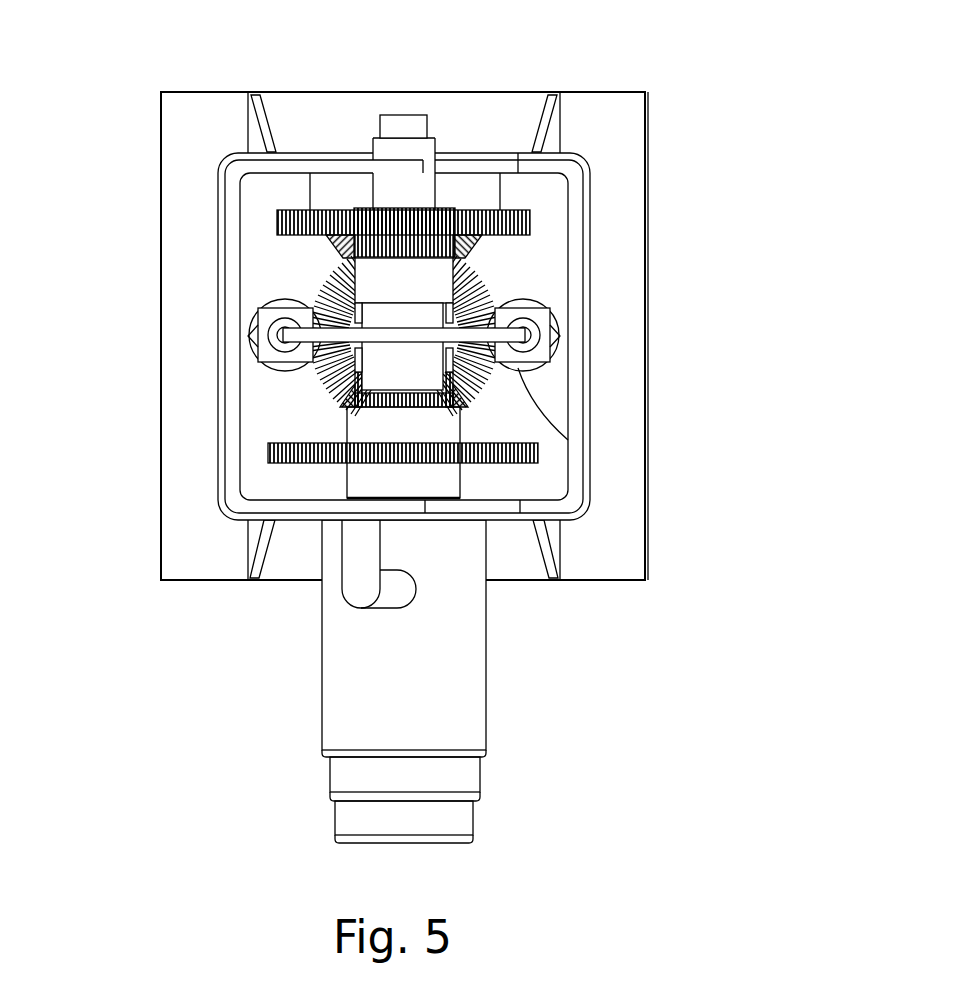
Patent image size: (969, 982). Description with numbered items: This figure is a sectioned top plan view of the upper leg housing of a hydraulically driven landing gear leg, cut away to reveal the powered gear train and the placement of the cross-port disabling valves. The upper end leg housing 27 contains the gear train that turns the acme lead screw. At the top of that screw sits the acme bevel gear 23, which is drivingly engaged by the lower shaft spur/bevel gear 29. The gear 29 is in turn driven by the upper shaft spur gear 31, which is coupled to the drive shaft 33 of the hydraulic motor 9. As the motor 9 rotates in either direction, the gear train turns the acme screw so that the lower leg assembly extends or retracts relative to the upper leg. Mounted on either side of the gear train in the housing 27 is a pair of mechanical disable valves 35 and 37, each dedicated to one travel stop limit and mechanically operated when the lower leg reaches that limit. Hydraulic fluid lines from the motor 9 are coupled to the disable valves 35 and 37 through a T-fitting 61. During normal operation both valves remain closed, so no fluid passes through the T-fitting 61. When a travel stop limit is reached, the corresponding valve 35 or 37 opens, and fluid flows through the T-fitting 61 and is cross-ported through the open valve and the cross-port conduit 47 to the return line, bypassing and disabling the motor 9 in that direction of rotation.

The hydraulic motor 9 is at (413, 666).
The acme bevel gear 23 is at (506, 302).
The upper end leg housing 27 is at (217, 311).
The lower shaft spur/bevel gear 29 is at (528, 233).
The upper shaft spur gear 31 is at (434, 222).
The drive shaft 33 is at (408, 397).
The disable valve 35 is at (250, 338).
The disable valve 37 is at (557, 330).
The cross-port conduit 47 is at (415, 337).
The T-fitting 61 is at (370, 558).